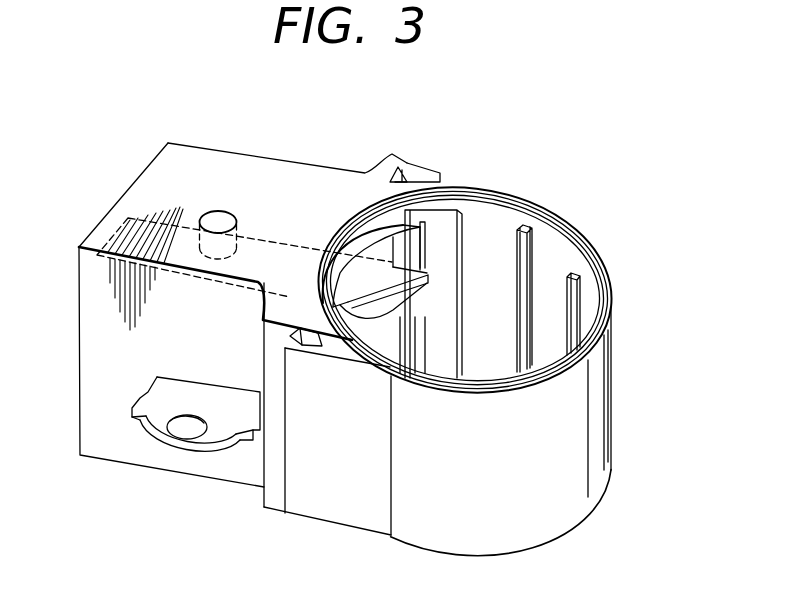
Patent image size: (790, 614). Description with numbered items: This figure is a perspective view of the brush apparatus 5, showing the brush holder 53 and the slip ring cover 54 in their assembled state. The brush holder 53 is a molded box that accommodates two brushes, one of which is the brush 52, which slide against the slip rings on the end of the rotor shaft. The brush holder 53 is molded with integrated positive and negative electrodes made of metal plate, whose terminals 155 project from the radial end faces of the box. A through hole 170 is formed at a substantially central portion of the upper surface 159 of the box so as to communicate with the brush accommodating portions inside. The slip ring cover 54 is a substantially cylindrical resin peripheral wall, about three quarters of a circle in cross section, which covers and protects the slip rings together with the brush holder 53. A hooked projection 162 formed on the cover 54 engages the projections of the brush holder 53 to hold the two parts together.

The brush apparatus 5 is at (510, 170).
The brush holder 53 is at (160, 180).
The upper surface 159 is at (210, 173).
The through hole 170 is at (222, 221).
The positive and negative terminals 155 is at (180, 448).
The hooked projection 162 is at (340, 493).
The slip ring cover 54 is at (597, 404).
The brush 52 is at (413, 297).